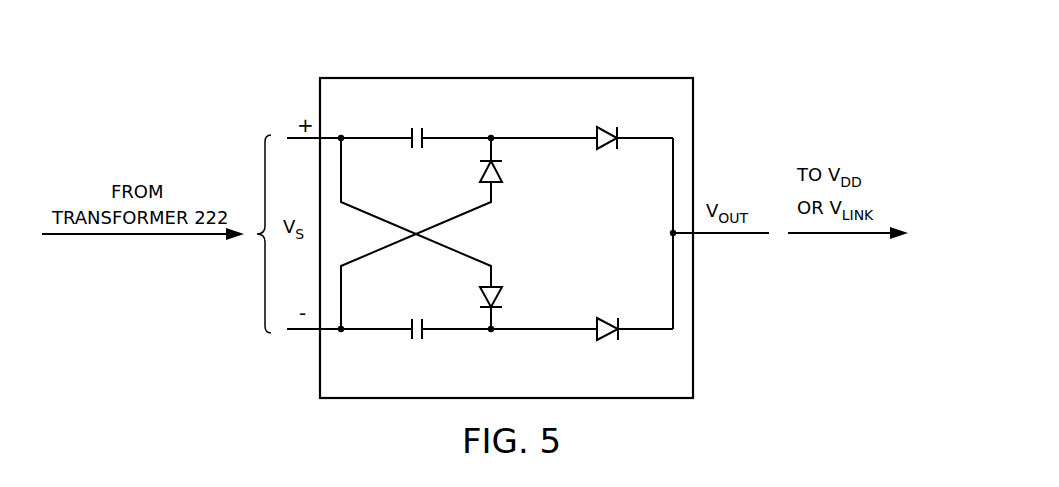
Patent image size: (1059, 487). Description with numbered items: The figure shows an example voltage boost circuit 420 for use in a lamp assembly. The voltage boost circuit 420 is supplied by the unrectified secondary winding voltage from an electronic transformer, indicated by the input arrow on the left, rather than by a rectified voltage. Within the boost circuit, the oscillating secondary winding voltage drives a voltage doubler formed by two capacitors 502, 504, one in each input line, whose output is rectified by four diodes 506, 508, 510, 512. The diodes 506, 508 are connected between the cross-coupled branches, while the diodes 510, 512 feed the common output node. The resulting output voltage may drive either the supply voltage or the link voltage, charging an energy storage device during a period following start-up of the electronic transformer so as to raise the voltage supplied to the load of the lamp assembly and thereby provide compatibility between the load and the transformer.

The voltage boost circuit 420 is at (425, 74).
The capacitor 502 is at (412, 150).
The capacitor 504 is at (412, 318).
The diode 506 is at (502, 172).
The diode 508 is at (502, 296).
The diode 510 is at (605, 150).
The diode 512 is at (605, 341).